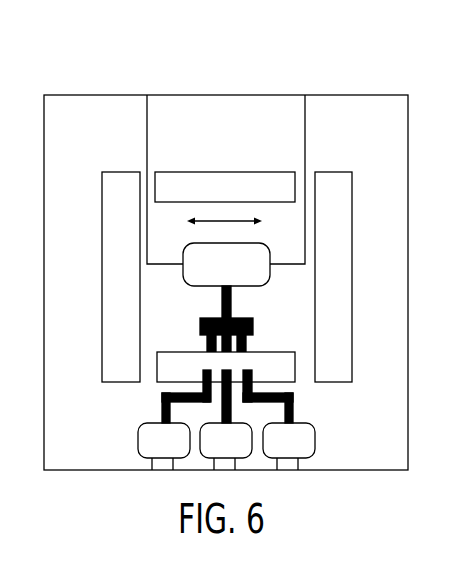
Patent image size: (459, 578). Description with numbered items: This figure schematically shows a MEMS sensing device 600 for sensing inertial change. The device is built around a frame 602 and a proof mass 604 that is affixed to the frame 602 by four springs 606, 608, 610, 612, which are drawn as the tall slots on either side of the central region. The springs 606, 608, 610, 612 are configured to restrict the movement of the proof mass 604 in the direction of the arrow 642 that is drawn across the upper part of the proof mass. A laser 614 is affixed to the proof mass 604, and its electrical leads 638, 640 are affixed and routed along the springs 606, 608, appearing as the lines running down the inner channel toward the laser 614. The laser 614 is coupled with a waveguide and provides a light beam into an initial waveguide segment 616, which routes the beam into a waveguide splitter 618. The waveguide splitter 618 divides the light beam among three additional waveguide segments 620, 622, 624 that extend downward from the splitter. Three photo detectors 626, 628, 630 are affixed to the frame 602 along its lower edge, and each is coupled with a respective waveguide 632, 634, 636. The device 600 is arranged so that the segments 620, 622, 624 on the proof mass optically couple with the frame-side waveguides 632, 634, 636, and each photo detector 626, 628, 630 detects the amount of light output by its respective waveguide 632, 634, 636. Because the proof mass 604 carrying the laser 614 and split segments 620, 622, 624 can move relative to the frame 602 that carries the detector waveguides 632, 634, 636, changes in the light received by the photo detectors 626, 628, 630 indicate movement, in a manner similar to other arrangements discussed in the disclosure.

The MEMS sensing device 600 is at (273, 48).
The frame 602 is at (100, 95).
The proof mass 604 is at (327, 300).
The spring 606 is at (138, 185).
The spring 608 is at (318, 185).
The spring 610 is at (138, 367).
The spring 612 is at (352, 367).
The laser 614 is at (186, 247).
The initial waveguide segment 616 is at (231, 293).
The waveguide splitter 618 is at (253, 322).
The waveguide segment 620 is at (207, 340).
The waveguide segment 622 is at (225, 352).
The waveguide segment 624 is at (247, 340).
The photo detector 626 is at (315, 432).
The photo detector 628 is at (252, 458).
The photo detector 630 is at (140, 428).
The waveguide 632 is at (293, 396).
The waveguide 634 is at (231, 400).
The waveguide 636 is at (162, 396).
The electrical lead 638 is at (305, 110).
The electrical lead 640 is at (147, 110).
The arrow 642 is at (233, 218).